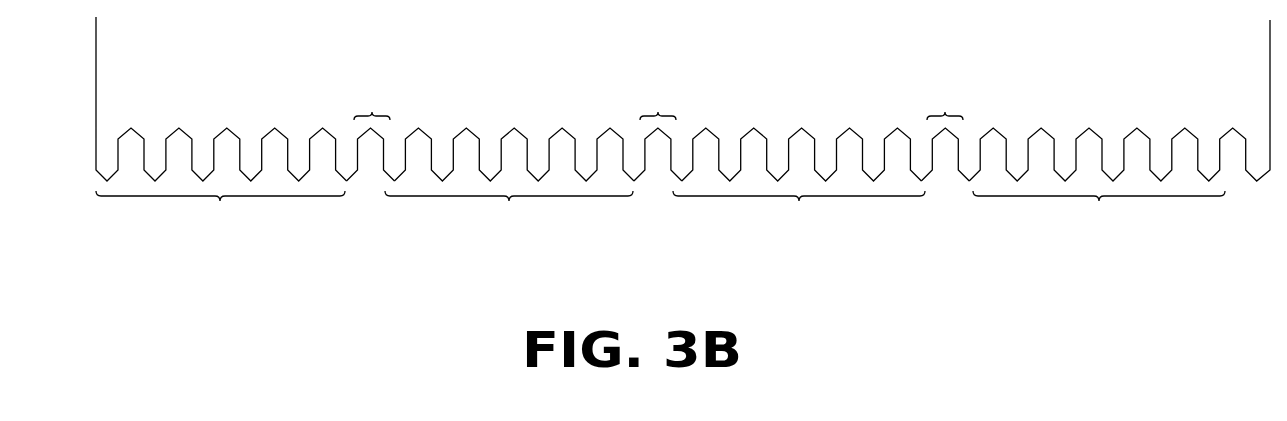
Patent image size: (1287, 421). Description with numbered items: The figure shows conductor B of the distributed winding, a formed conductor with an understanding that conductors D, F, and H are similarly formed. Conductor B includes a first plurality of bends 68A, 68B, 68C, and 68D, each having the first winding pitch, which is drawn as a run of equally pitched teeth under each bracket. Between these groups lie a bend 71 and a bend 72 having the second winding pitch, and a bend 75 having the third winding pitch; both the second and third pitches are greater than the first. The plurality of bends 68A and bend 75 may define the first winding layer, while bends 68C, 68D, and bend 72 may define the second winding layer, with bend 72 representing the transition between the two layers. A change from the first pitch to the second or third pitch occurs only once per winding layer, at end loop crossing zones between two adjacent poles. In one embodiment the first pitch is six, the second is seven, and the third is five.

The bend of first plurality of bends 68A is at (220, 98).
The bend of first plurality of bends 68B is at (520, 98).
The bend of first plurality of bends 68C is at (813, 98).
The bend of first plurality of bends 68D is at (1114, 97).
The bend 75 is at (367, 208).
The bend 71 is at (657, 208).
The bend 72 is at (948, 207).